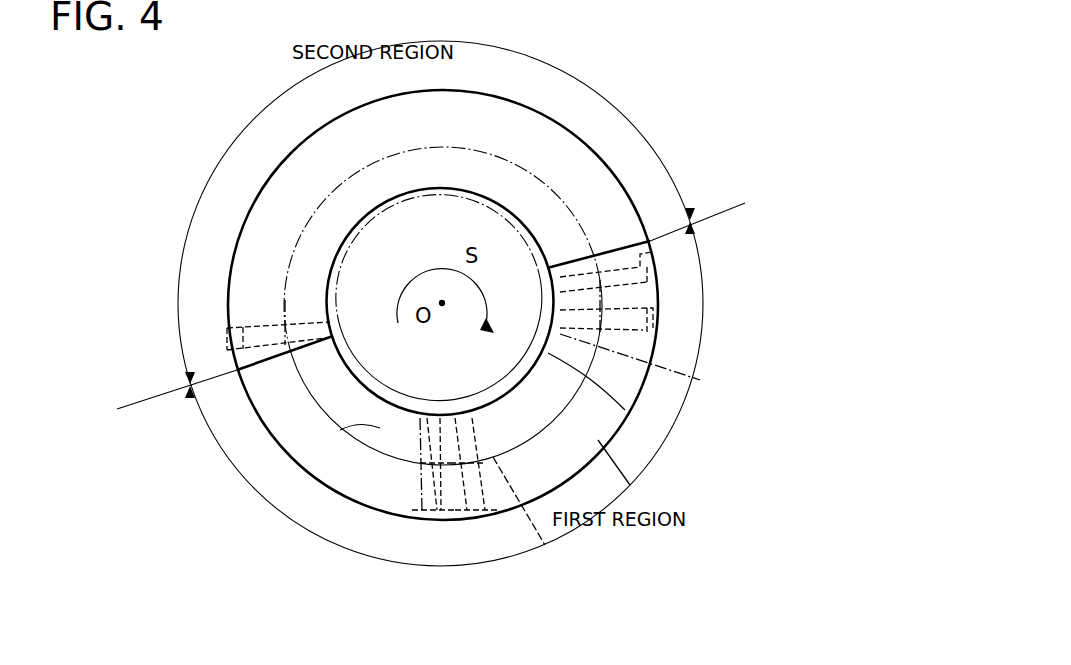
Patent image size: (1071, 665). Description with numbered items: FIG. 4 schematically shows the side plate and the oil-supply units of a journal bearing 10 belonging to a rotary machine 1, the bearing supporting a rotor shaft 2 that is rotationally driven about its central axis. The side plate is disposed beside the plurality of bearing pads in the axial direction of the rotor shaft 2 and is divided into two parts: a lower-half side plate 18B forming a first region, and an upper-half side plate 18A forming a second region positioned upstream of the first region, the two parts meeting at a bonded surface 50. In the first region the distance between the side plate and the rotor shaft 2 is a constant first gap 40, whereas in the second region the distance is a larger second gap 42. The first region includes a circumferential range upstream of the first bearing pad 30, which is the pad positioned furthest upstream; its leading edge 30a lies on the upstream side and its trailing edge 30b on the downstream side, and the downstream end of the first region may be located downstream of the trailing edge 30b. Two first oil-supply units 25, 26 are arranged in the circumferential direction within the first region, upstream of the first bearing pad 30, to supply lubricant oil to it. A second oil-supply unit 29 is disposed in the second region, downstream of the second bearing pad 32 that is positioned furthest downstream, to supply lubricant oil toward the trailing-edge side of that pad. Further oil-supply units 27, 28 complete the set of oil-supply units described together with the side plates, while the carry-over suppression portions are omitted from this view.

The rotary machine 1 is at (769, 80).
The rotor shaft 2 is at (465, 220).
The journal bearing 10 is at (607, 133).
The upper-half side plate 18A is at (288, 185).
The lower-half side plate 18B is at (300, 440).
The first oil-supply unit 25 is at (667, 266).
The first oil-supply unit 26 is at (667, 327).
The oil-supply unit 27 is at (490, 523).
The oil-supply unit 28 is at (430, 523).
The second oil-supply unit 29 is at (267, 348).
The first bearing pad 30 is at (637, 485).
The leading edge 30a is at (700, 380).
The trailing edge 30b is at (545, 545).
The second bearing pad 32 is at (353, 440).
The first gap 40 is at (625, 410).
The second gap 42 is at (508, 217).
The bonded surface 50 is at (268, 362).